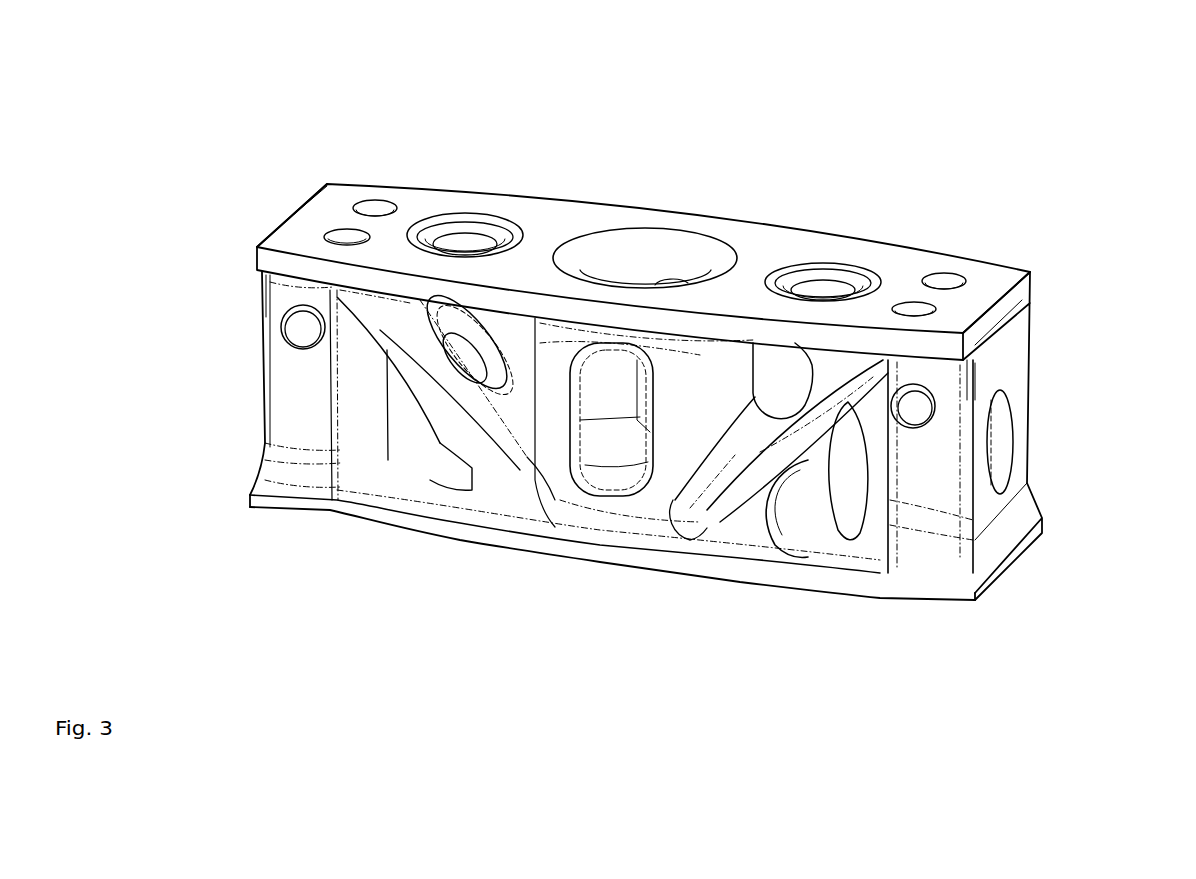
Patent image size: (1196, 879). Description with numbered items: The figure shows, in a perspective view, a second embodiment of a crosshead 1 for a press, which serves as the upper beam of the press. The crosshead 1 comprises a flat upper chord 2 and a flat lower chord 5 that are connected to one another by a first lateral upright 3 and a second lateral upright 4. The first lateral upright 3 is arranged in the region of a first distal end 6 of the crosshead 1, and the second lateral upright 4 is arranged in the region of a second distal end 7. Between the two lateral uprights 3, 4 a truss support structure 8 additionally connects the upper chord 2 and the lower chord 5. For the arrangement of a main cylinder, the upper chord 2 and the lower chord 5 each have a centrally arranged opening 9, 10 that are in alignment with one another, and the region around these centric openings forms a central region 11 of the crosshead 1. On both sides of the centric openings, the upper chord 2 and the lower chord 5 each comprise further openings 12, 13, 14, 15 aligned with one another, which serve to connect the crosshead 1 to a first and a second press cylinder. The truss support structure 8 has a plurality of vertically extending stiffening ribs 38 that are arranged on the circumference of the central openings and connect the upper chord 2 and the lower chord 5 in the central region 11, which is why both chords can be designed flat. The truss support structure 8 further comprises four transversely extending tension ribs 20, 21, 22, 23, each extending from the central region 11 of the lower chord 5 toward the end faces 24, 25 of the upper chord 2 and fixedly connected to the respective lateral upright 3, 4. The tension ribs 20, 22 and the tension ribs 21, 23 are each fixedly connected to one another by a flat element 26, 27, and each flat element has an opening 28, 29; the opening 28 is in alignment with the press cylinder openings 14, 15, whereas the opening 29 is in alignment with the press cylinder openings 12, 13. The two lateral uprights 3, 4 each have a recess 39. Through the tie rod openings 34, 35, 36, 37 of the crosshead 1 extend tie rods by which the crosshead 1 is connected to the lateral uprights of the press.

The crosshead 1 is at (235, 558).
The upper chord 2 is at (828, 233).
The first lateral upright 3 is at (278, 413).
The second lateral upright 4 is at (943, 540).
The lower chord 5 is at (479, 546).
The first distal end 6 is at (268, 382).
The second distal end 7 is at (1003, 563).
The truss support structure 8 is at (663, 543).
The opening 9 is at (650, 277).
The opening 10 is at (632, 487).
The central region 11 is at (570, 47).
The further opening 12 is at (823, 287).
The further opening 13 is at (808, 537).
The further opening 14 is at (468, 241).
The further opening 15 is at (443, 481).
The tension rib 20 is at (443, 398).
The tension rib 21 is at (795, 442).
The tension rib 22 is at (513, 345).
The tension rib 23 is at (842, 510).
The end face 24 is at (282, 222).
The end face 25 is at (978, 335).
The flat element 26 is at (467, 387).
The flat element 27 is at (795, 440).
The opening 29 is at (816, 414).
The opening 28 is at (483, 348).
The tie rod opening 34 is at (342, 237).
The tie rod opening 35 is at (373, 207).
The tie rod opening 36 is at (950, 280).
The tie rod opening 37 is at (917, 315).
The stiffening rib 38 is at (553, 413).
The recess 39 is at (993, 450).